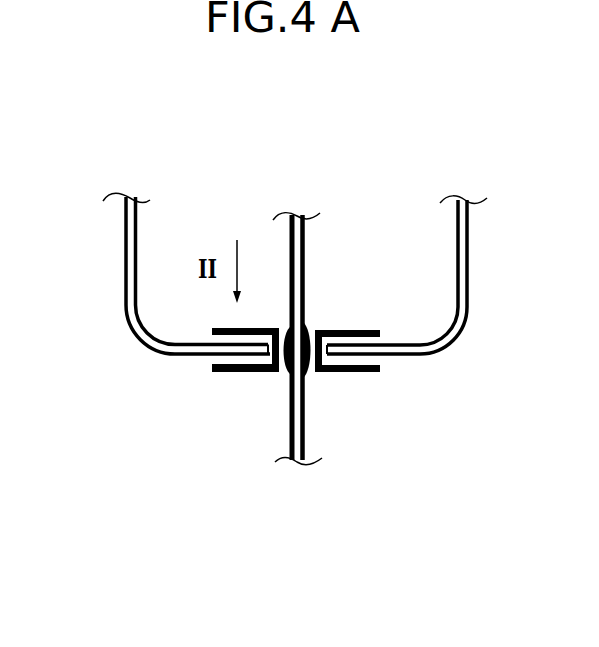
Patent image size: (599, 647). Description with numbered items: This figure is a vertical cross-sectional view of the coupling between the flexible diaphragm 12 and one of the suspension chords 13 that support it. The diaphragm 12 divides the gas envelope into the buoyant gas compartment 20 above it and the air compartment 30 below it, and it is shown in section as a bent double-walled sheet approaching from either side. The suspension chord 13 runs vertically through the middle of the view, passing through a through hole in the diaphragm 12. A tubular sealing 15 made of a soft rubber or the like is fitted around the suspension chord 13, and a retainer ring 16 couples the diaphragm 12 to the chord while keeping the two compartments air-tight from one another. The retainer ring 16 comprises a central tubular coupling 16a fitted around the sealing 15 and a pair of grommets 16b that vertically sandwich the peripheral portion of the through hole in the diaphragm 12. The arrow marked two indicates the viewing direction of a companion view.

The diaphragm 12 is at (127, 263).
The suspension chord 13 is at (305, 252).
The tubular sealing 15 is at (289, 368).
The retainer ring 16 is at (302, 362).
The central tubular coupling 16a is at (268, 373).
The grommets 16b is at (362, 330).
The buoyant gas compartment 20 is at (230, 192).
The air compartment 30 is at (130, 452).